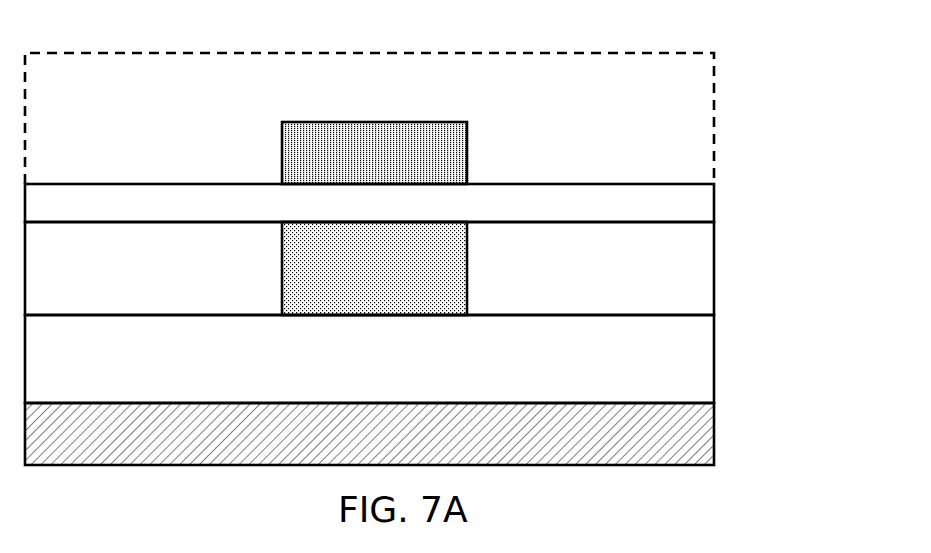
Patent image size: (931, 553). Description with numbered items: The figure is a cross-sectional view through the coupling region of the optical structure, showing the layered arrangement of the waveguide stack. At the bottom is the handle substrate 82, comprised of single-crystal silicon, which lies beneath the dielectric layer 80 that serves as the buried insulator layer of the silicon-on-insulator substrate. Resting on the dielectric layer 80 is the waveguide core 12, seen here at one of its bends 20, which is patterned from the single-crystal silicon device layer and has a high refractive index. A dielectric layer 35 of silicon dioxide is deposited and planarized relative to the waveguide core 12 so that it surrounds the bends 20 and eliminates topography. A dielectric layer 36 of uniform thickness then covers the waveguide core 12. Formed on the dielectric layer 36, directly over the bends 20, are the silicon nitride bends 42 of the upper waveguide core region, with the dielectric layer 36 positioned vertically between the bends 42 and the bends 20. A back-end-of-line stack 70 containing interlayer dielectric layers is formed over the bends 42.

The back-end-of-line stack 70 is at (697, 107).
The waveguide core 12 is at (482, 267).
The dielectric layer 36 is at (690, 208).
The dielectric layer 35 is at (687, 260).
The dielectric layer 80 is at (695, 372).
The handle substrate 82 is at (695, 430).
The bends 42 is at (437, 155).
The bends 20 is at (342, 272).